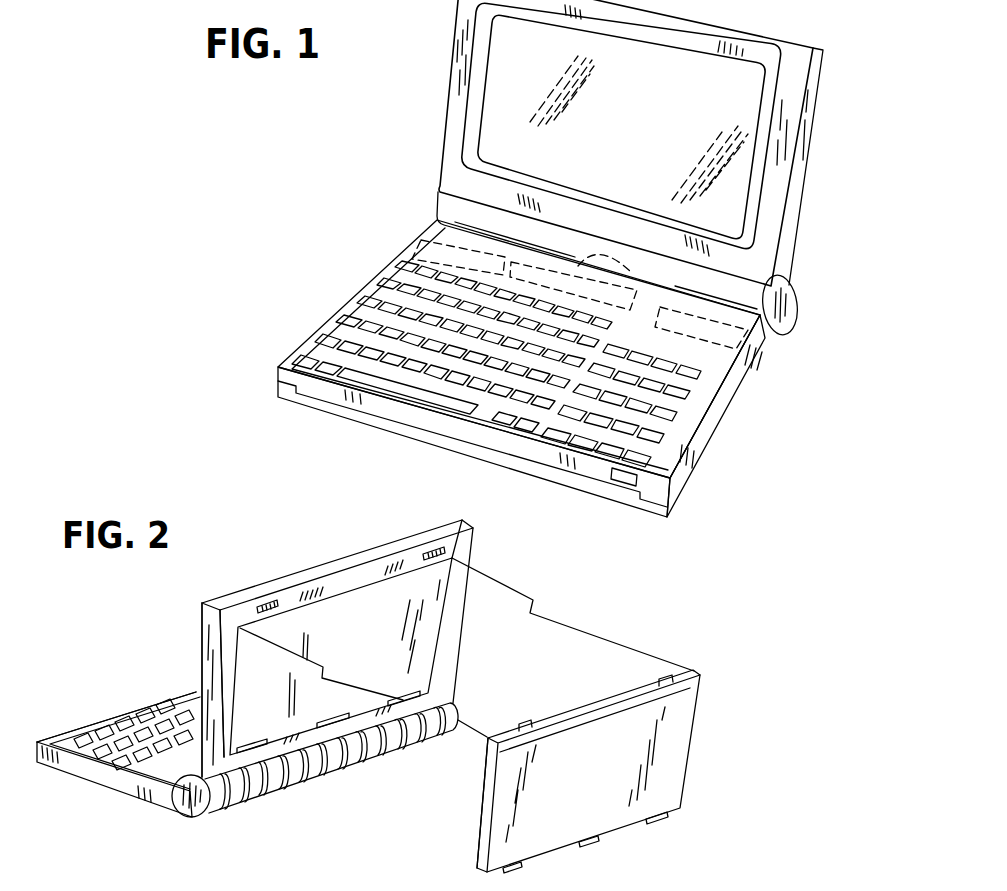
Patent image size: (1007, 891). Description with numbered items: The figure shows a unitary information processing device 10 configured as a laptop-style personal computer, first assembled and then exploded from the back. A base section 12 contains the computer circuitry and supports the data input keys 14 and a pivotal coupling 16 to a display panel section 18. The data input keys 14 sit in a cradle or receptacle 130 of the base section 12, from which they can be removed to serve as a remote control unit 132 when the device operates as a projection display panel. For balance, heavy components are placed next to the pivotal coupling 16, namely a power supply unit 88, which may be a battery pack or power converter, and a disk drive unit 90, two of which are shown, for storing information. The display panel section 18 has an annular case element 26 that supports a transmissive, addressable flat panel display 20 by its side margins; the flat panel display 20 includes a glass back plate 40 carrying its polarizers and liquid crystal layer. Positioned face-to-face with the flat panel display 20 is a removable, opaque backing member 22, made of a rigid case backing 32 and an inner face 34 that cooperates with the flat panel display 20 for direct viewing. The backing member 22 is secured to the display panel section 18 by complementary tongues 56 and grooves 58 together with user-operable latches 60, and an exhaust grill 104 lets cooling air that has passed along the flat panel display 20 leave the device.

In FIG. 1, the information processing device 10 is at (320, 260).
In FIG. 2, the information processing device 10 is at (147, 821).
In FIG. 1, the base section 12 is at (733, 395).
In FIG. 2, the base section 12 is at (77, 770).
In FIG. 1, the data input keys 14 is at (325, 320).
In FIG. 2, the data input keys 14 is at (117, 722).
In FIG. 1, the pivotal coupling 16 is at (796, 302).
In FIG. 2, the pivotal coupling 16 is at (247, 790).
In FIG. 1, the display panel section 18 is at (766, 177).
In FIG. 2, the display panel section 18 is at (193, 638).
In FIG. 1, the flat panel display 20 is at (505, 61).
In FIG. 2, the flat panel display 20 is at (335, 600).
In FIG. 2, the backing member 22 is at (703, 713).
In FIG. 1, the annular case element 26 is at (460, 88).
In FIG. 2, the annular case element 26 is at (205, 662).
In FIG. 2, the case backing 32 is at (660, 743).
In FIG. 2, the inner face 34 is at (476, 803).
In FIG. 2, the glass back plate 40 is at (378, 629).
In FIG. 2, the tongues 56 is at (520, 868).
In FIG. 2, the grooves 58 is at (332, 716).
In FIG. 2, the user-operable latch 60 is at (274, 600).
In FIG. 1, the power supply unit 88 is at (615, 275).
In FIG. 1, the disk drive unit 90 is at (420, 240).
In FIG. 2, the exhaust grill 104 is at (350, 772).
In FIG. 1, the receptacle 130 is at (692, 431).
In FIG. 2, the receptacle 130 is at (79, 740).
In FIG. 1, the remote control unit 132 is at (622, 478).